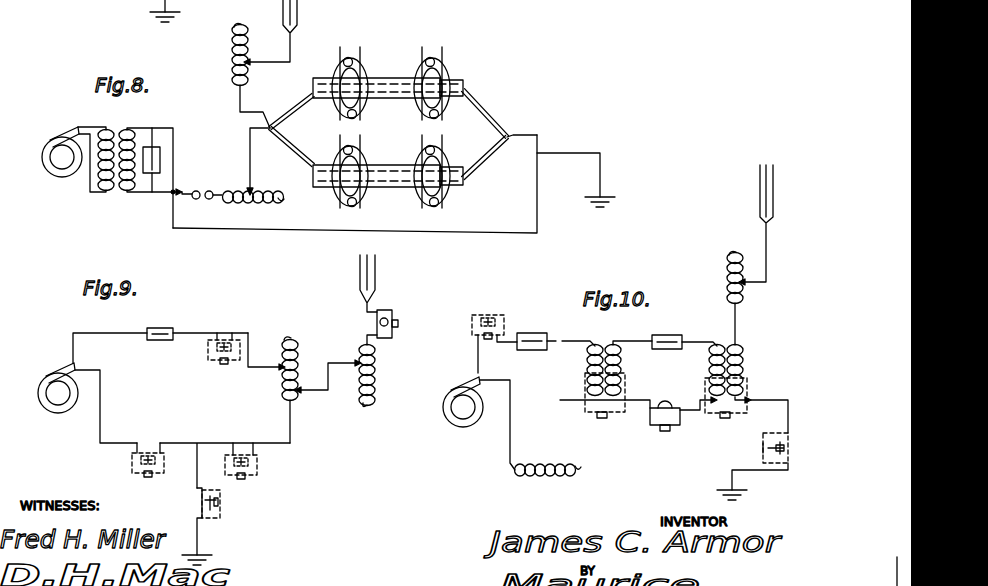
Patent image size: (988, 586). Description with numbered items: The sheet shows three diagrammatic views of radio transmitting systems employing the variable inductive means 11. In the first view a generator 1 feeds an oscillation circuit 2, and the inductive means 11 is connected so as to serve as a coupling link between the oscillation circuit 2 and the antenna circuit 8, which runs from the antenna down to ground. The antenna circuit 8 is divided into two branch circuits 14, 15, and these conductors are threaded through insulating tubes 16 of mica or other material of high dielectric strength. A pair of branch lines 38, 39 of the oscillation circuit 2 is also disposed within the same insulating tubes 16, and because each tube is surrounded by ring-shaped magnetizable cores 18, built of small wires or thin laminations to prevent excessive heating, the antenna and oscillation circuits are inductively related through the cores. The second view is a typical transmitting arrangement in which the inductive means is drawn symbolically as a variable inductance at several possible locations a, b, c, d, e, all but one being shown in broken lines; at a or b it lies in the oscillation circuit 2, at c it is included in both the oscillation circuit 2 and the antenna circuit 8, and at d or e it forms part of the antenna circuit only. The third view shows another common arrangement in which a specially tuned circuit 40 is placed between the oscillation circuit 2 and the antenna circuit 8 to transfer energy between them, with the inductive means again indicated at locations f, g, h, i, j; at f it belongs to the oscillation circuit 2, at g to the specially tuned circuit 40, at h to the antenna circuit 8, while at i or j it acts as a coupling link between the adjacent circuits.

In FIG. 8, the generator 1 is at (62, 152).
In FIG. 9, the generator 1 is at (58, 388).
In FIG. 8, the oscillation circuit 2 is at (235, 228).
In FIG. 9, the oscillation circuit 2 is at (188, 335).
In FIG. 10, the oscillation circuit 2 is at (563, 340).
In FIG. 8, the antenna circuit 8 is at (245, 100).
In FIG. 9, the antenna circuit 8 is at (340, 365).
In FIG. 10, the antenna circuit 8 is at (737, 324).
In FIG. 8, the variable inductive means 11 is at (388, 65).
In FIG. 8, the branch circuit 14 is at (288, 104).
In FIG. 8, the branch circuit 15 is at (295, 155).
In FIG. 8, the insulating tube 16 is at (388, 78).
In FIG. 8, the magnetizable core 18 is at (447, 73).
In FIG. 8, the branch line 38 is at (483, 105).
In FIG. 8, the branch line 39 is at (485, 165).
In FIG. 10, the specially tuned circuit 40 is at (635, 342).
In FIG. 9, the location a is at (224, 343).
In FIG. 9, the location b is at (148, 453).
In FIG. 9, the location c is at (241, 455).
In FIG. 9, the location d is at (203, 521).
In FIG. 9, the location e is at (378, 324).
In FIG. 10, the location f is at (510, 312).
In FIG. 10, the location g is at (665, 409).
In FIG. 10, the location h is at (762, 448).
In FIG. 10, the location i is at (610, 382).
In FIG. 10, the location j is at (724, 391).